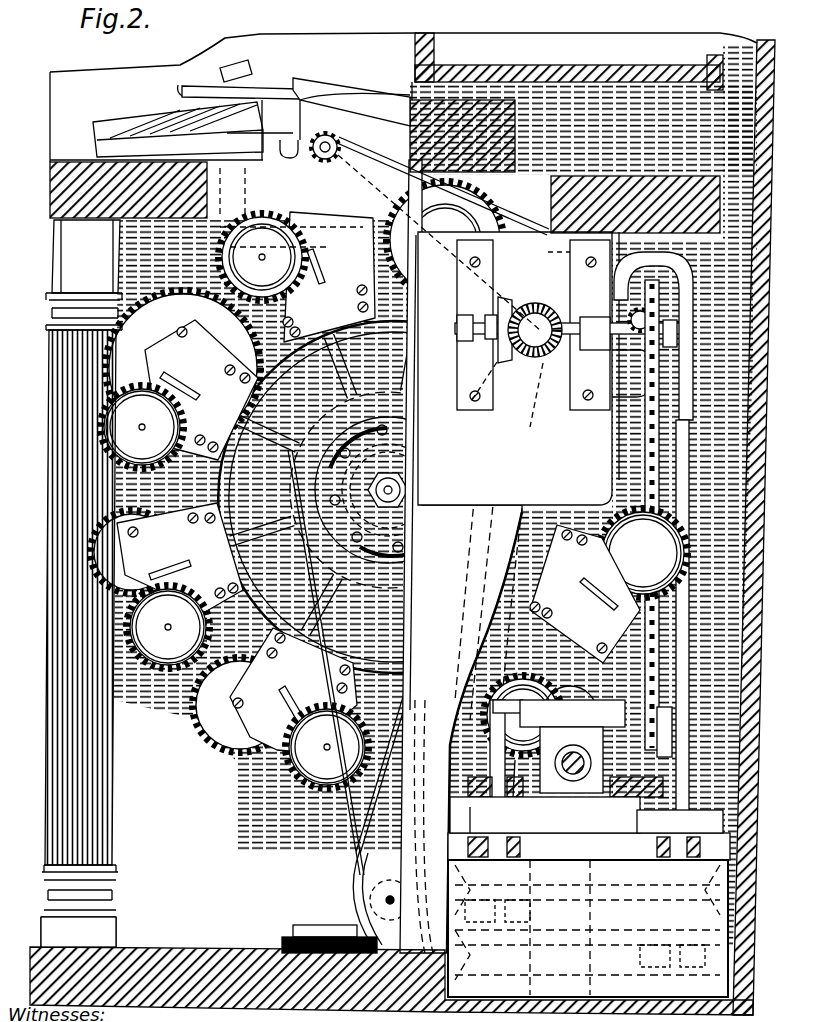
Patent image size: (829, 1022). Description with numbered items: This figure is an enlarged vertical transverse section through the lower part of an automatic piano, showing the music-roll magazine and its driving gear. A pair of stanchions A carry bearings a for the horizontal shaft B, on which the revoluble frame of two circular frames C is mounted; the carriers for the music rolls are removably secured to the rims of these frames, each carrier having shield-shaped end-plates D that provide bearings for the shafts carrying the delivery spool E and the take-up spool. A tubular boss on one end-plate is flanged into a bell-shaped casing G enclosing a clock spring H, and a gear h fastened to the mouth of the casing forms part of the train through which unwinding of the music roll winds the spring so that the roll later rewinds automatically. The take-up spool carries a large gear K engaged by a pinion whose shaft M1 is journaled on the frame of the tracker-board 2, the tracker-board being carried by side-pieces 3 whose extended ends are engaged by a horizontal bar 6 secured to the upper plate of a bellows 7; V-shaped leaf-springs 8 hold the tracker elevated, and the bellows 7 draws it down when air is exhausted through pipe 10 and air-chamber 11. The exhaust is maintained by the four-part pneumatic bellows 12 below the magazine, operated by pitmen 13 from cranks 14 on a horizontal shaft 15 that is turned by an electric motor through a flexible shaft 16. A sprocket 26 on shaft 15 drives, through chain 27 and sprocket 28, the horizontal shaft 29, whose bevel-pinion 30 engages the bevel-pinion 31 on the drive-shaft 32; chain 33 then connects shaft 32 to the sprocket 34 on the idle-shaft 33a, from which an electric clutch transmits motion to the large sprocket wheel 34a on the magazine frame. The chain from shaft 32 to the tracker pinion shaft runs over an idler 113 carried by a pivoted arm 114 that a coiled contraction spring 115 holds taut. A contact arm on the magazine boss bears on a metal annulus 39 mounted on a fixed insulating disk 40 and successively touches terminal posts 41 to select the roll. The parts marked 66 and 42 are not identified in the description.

The horizontal bar 6 is at (232, 62).
The lever arm 66 is at (182, 88).
The bellows 7 is at (133, 112).
The tracker-board 2 is at (284, 100).
The side-pieces 3 is at (330, 128).
The V-shaped leaf-springs 8 is at (332, 102).
The idler 113 is at (562, 249).
The coiled contraction spring 115 is at (635, 245).
The drive-shaft 32 is at (535, 310).
The pivoted arm 114 is at (548, 318).
The horizontal shaft 29 is at (630, 322).
The sprocket 28 is at (663, 297).
The pipe 10 is at (697, 361).
The bevel-pinion 30 is at (505, 365).
The bevel-pinion 31 is at (545, 355).
The chain 33 is at (520, 448).
The ring 42 is at (352, 441).
The fixed disk 40 is at (300, 505).
The metal annulus 39 is at (380, 505).
The terminal posts 41 is at (365, 523).
The large sprocket wheel 34a is at (365, 600).
The chain 27 is at (650, 604).
The horizontal shaft 15 is at (657, 710).
The cranks 14 is at (677, 728).
The flexible shaft 16 is at (568, 755).
The sprocket 26 is at (680, 764).
The pitmen 13 is at (492, 815).
The air-chamber 11 is at (520, 788).
The exhaust pneumatic 12 is at (598, 860).
The idle-shaft 33a is at (342, 806).
The sprocket 34 is at (360, 902).
The stanchions A is at (470, 556).
The horizontal shaft B is at (352, 497).
The circular frames C is at (167, 586).
The shield-shaped end-plates D is at (260, 336).
The music roll spool E is at (281, 708).
The bell-shaped casing G is at (262, 257).
The clock spring H is at (445, 236).
The large gear K is at (183, 368).
The gear h is at (262, 208).
The bearings a is at (374, 507).
The pinion shaft M1 is at (314, 156).